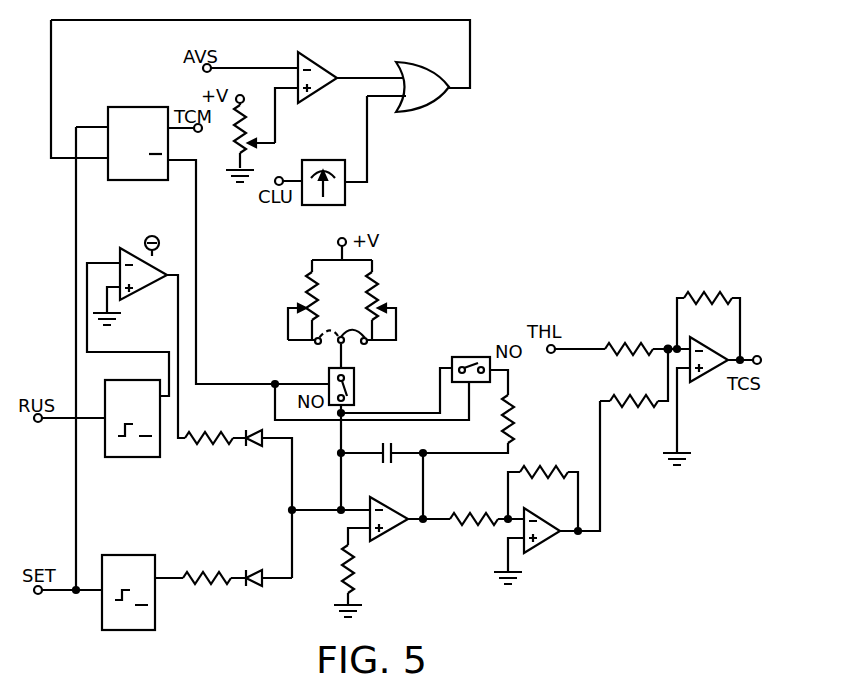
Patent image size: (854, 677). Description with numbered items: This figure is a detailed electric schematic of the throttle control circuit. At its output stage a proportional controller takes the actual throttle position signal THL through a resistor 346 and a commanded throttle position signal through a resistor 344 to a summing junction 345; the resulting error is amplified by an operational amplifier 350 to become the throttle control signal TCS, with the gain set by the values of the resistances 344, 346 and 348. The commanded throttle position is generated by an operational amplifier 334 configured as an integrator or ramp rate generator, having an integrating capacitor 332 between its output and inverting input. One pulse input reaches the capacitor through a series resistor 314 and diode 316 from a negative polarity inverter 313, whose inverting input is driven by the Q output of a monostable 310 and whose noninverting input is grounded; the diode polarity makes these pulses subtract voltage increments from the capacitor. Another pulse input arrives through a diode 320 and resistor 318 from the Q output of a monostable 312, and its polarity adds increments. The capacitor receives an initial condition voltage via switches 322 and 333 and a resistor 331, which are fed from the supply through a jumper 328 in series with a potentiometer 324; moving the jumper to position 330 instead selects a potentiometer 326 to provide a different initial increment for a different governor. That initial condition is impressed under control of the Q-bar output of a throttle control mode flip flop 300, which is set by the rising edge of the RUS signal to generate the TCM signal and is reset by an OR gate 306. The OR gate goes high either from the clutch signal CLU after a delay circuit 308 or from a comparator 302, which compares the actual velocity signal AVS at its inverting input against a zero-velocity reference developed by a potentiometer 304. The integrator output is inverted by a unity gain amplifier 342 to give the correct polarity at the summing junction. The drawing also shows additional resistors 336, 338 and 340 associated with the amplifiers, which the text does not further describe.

The throttle control mode flip flop 300 is at (140, 181).
The comparator 302 is at (323, 60).
The potentiometer 304 is at (236, 143).
The OR gate 306 is at (428, 98).
The delay circuit 308 is at (347, 194).
The monostable 310 is at (113, 457).
The monostable 312 is at (126, 555).
The negative polarity inverter 313 is at (163, 271).
The resistor 314 is at (205, 444).
The diode 316 is at (250, 447).
The resistor 318 is at (203, 585).
The diode 320 is at (250, 590).
The switch 322 is at (356, 385).
The potentiometer 324 is at (377, 289).
The potentiometer 326 is at (306, 290).
The jumper 328 is at (365, 338).
The position 330 is at (316, 346).
The resistor 331 is at (509, 425).
The integrating capacitor 332 is at (397, 448).
The switch 333 is at (462, 357).
The operational amplifier 334 is at (391, 524).
The resistor 336 is at (356, 572).
The resistor 338 is at (470, 512).
The feedback resistor 340 is at (546, 468).
The unity gain amplifier 342 is at (548, 545).
The resistor 344 is at (635, 406).
The summing junction 345 is at (668, 345).
The resistor 346 is at (628, 344).
The resistance 348 is at (707, 292).
The operational amplifier 350 is at (708, 375).